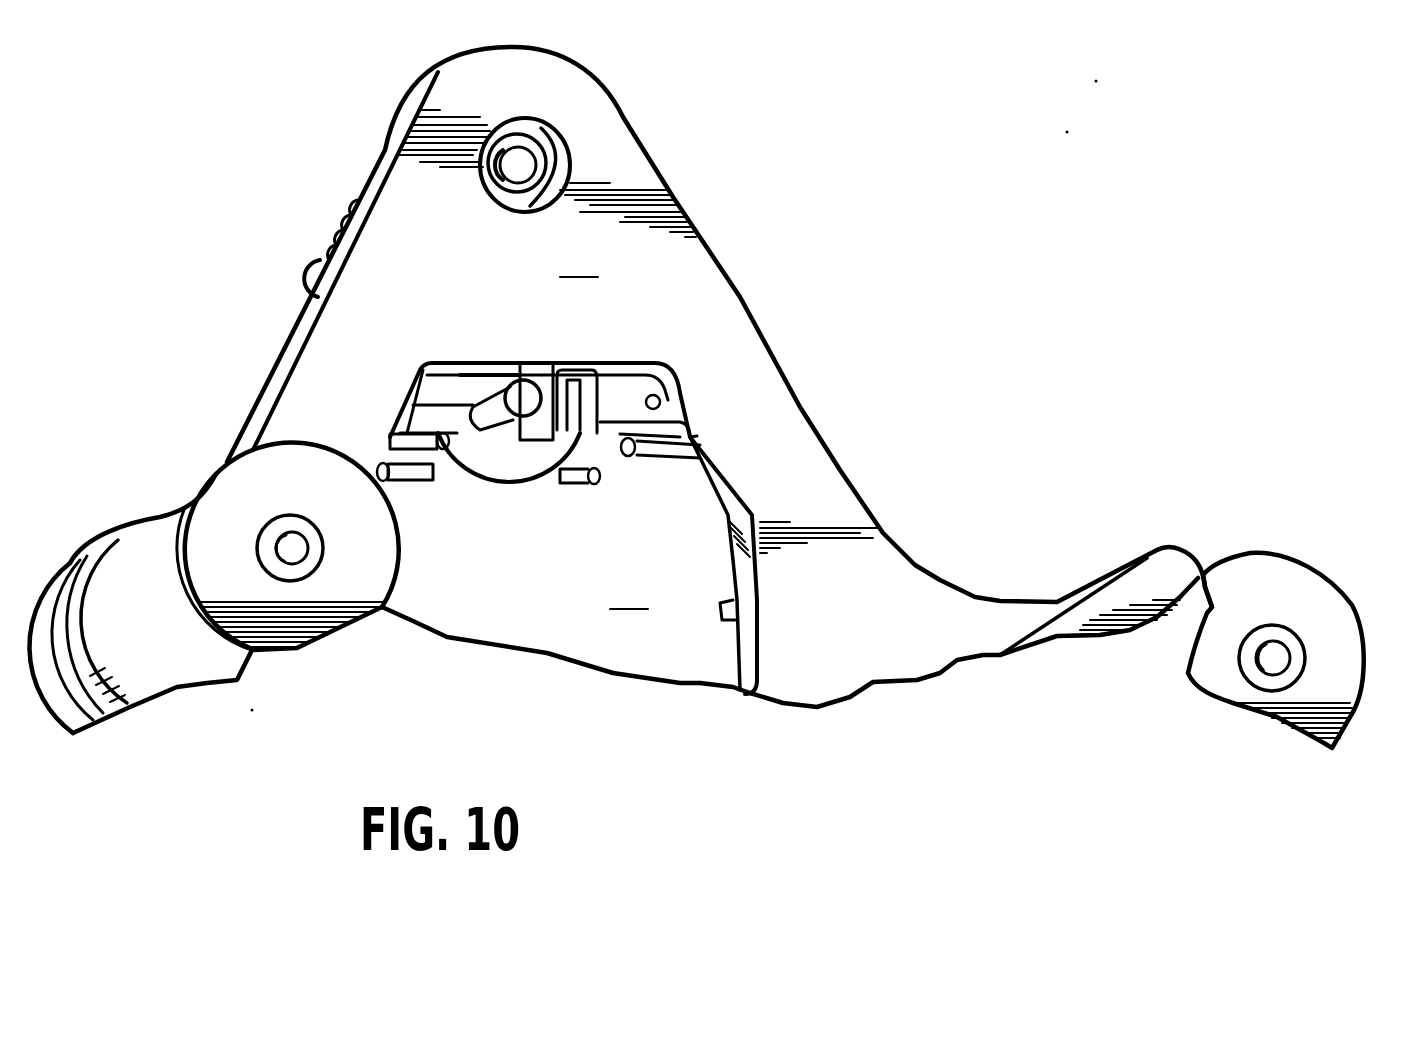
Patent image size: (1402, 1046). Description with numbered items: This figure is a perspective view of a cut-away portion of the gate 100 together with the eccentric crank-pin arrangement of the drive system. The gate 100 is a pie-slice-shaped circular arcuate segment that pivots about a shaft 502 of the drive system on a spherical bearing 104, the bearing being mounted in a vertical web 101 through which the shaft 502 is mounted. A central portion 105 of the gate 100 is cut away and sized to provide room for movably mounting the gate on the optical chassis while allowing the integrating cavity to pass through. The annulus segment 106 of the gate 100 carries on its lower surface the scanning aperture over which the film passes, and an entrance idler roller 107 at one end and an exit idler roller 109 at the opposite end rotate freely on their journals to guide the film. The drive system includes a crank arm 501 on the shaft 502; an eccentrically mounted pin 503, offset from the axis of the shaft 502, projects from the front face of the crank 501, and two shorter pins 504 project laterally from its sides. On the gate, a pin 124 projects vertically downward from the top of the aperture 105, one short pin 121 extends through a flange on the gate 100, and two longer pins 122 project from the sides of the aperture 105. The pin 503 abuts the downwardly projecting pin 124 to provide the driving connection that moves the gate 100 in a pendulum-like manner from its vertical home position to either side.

The gate 100 is at (716, 259).
The vertical web 101 is at (578, 262).
The spherical bearing 104 is at (543, 147).
The central portion 105 is at (744, 543).
The annulus segment 106 is at (1152, 575).
The entrance idler roller 107 is at (1313, 590).
The exit idler roller 109 is at (150, 542).
The short pin 121 is at (682, 393).
The longer pins 122 is at (408, 435).
The pin 124 is at (540, 363).
The crank arm 501 is at (483, 500).
The shaft 502 is at (299, 268).
The eccentrically mounted pin 503 is at (495, 395).
The shorter pins 504 is at (413, 477).